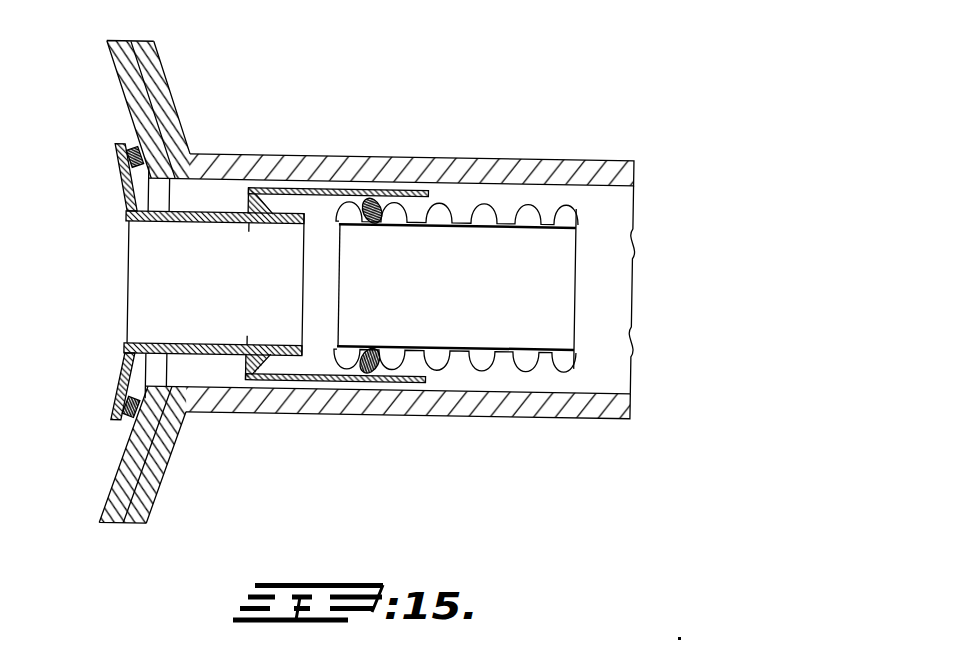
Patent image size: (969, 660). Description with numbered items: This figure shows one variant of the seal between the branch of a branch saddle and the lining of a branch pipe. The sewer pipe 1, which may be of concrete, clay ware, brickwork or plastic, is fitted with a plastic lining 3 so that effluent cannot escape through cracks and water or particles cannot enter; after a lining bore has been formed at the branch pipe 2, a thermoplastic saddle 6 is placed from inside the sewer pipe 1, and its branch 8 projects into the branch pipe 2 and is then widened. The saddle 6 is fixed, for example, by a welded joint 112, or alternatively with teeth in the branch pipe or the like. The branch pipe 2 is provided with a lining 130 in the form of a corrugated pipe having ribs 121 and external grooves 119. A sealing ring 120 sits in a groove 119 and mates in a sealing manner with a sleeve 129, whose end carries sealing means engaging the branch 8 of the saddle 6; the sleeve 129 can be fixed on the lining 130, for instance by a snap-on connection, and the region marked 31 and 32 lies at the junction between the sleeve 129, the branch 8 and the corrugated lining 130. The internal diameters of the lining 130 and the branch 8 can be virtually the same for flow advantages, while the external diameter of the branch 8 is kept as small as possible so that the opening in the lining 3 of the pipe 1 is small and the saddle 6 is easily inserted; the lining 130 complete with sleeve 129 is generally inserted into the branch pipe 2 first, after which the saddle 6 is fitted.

The sewer pipe 1 is at (170, 115).
The branch pipe 2 is at (440, 154).
The plastic lining 3 is at (118, 82).
The saddle 6 is at (125, 193).
The branch 8 is at (150, 223).
The connecting collar 31 is at (304, 226).
The bellows end 32 is at (348, 228).
The welded joint 112 is at (127, 152).
The external groove 119 is at (505, 215).
The sealing ring 120 is at (387, 223).
The rib 121 is at (528, 358).
The sleeve 129 is at (318, 186).
The lining 130 is at (250, 216).